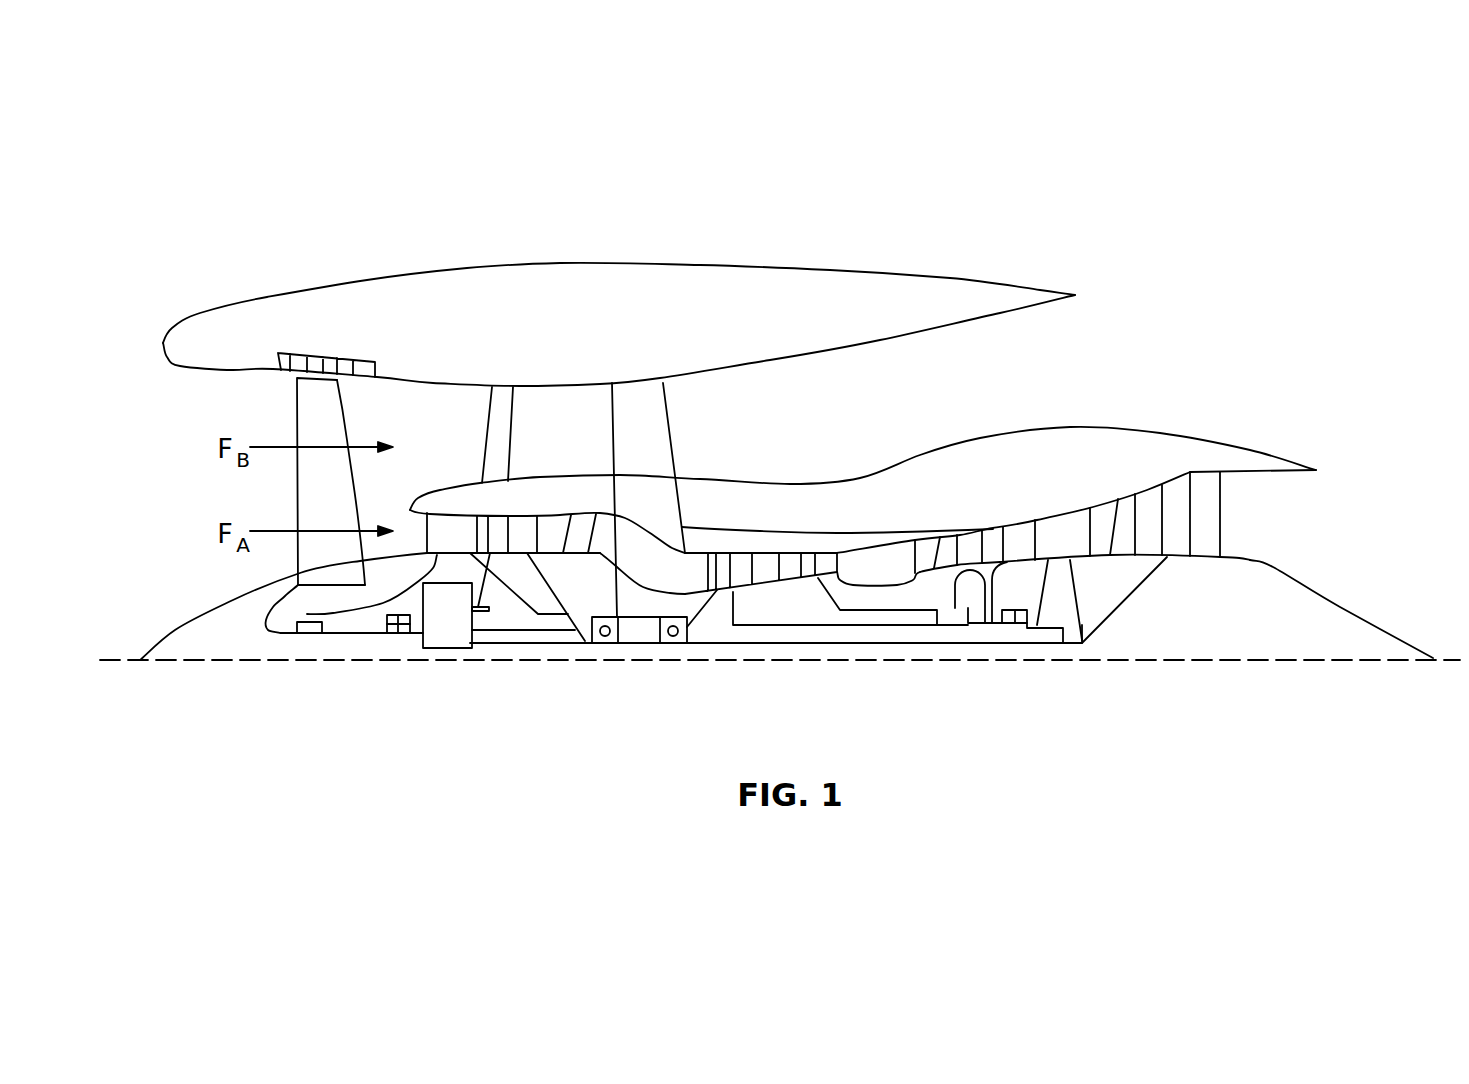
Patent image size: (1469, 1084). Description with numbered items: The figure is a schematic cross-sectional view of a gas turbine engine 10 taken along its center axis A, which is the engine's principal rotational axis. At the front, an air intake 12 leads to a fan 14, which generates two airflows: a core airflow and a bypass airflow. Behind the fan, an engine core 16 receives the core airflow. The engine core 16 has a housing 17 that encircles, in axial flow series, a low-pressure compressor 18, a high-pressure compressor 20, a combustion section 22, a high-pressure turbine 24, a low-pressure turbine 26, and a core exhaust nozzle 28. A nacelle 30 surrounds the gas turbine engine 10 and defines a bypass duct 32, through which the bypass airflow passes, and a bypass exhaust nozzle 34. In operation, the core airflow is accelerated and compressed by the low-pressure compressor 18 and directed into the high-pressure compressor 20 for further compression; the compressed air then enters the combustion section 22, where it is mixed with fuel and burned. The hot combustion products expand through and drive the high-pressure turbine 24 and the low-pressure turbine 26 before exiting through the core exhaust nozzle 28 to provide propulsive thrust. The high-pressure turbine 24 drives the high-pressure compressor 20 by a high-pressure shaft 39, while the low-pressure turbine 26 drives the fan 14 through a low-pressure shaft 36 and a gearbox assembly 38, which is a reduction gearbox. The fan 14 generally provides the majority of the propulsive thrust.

The gas turbine engine 10 is at (182, 229).
The air intake 12 is at (178, 494).
The fan 14 is at (305, 510).
The engine core 16 is at (995, 474).
The housing 17 is at (707, 498).
The low-pressure compressor 18 is at (550, 527).
The high-pressure compressor 20 is at (766, 575).
The combustion section 22 is at (866, 572).
The high-pressure turbine 24 is at (995, 557).
The low-pressure turbine 26 is at (1175, 495).
The core exhaust nozzle 28 is at (1240, 533).
The nacelle 30 is at (640, 262).
The bypass duct 32 is at (769, 406).
The bypass exhaust nozzle 34 is at (1134, 345).
The low-pressure shaft 36 is at (512, 643).
The gearbox assembly 38 is at (445, 640).
The high-pressure shaft 39 is at (850, 628).
The center axis A is at (1336, 662).